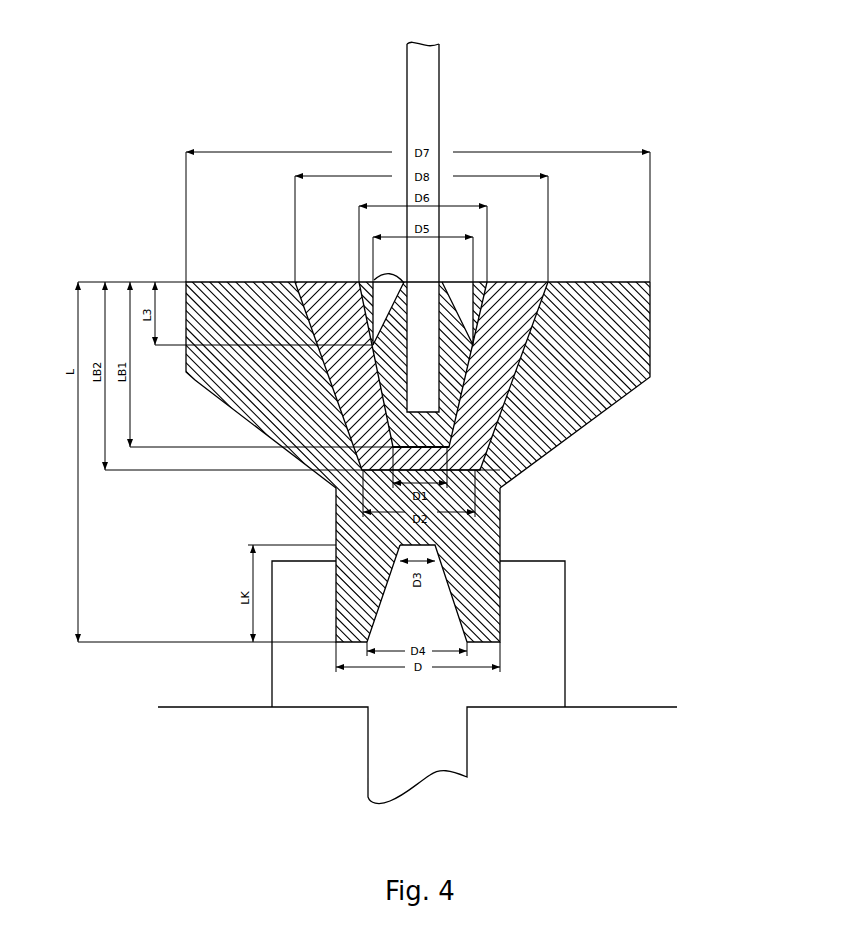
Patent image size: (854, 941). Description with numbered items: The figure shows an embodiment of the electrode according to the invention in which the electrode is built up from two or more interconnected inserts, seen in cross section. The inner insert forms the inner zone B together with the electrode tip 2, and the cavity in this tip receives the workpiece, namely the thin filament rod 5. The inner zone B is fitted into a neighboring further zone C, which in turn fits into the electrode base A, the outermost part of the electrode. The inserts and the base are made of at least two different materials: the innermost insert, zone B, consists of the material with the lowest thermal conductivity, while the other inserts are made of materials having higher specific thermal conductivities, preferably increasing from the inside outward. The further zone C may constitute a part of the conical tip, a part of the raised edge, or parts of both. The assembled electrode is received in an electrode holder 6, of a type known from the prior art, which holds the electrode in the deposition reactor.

The tip 2 is at (455, 292).
The filament rod 5 is at (427, 100).
The electrode holder 6 is at (567, 620).
The electrode base A is at (500, 513).
The inner zone B is at (540, 284).
The further zone C is at (507, 384).